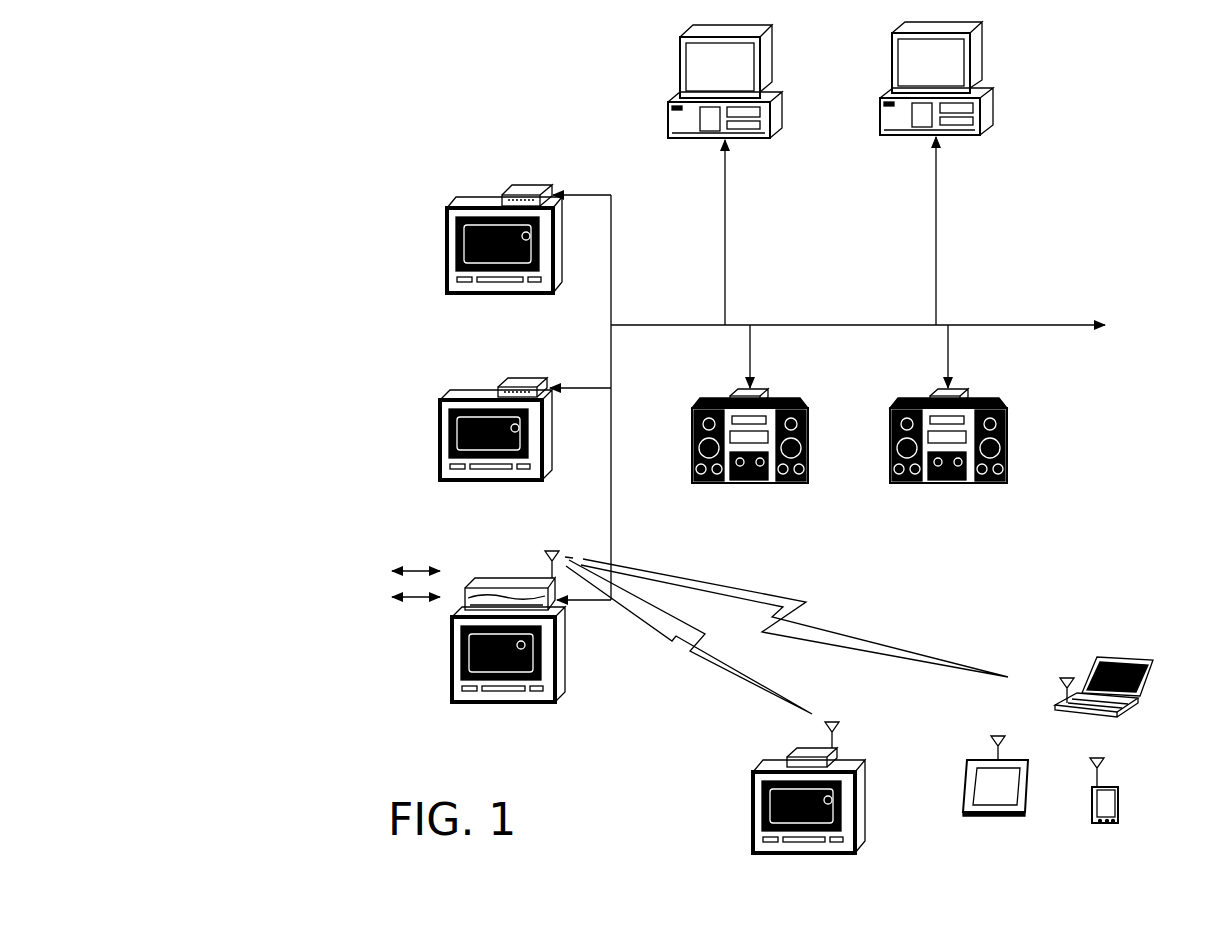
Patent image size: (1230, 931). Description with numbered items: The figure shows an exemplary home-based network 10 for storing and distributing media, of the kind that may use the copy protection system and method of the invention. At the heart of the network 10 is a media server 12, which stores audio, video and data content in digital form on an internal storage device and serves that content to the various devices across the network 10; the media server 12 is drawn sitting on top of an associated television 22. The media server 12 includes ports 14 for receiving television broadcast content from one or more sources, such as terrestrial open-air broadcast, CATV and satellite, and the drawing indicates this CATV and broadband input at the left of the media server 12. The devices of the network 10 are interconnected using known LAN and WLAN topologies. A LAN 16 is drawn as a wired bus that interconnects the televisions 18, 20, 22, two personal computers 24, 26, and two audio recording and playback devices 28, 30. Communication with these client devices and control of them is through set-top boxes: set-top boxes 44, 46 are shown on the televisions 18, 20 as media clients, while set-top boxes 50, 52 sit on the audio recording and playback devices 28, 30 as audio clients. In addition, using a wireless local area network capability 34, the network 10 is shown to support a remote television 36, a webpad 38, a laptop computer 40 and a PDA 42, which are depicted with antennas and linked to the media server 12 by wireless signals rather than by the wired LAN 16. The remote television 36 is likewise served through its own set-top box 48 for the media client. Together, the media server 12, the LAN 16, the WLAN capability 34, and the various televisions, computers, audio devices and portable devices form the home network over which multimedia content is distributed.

The home-based network 10 is at (530, 112).
The media server 12 is at (513, 582).
The ports 14 is at (316, 550).
The LAN 16 is at (785, 325).
The television 18 is at (447, 254).
The television 20 is at (440, 447).
The television 22 is at (452, 670).
The personal computer 24 is at (777, 117).
The personal computer 26 is at (988, 110).
The audio recording and playback device 28 is at (808, 450).
The audio recording and playback device 30 is at (1007, 448).
The wireless local area network capability 34 is at (818, 683).
The remote television 36 is at (753, 820).
The webpad 38 is at (968, 760).
The laptop computer 40 is at (1147, 688).
The PDA 42 is at (1108, 825).
The set-top box 44 is at (520, 196).
The set-top box 46 is at (522, 380).
The set-top box 48 is at (790, 755).
The set-top box 50 is at (732, 398).
The set-top box 52 is at (965, 390).